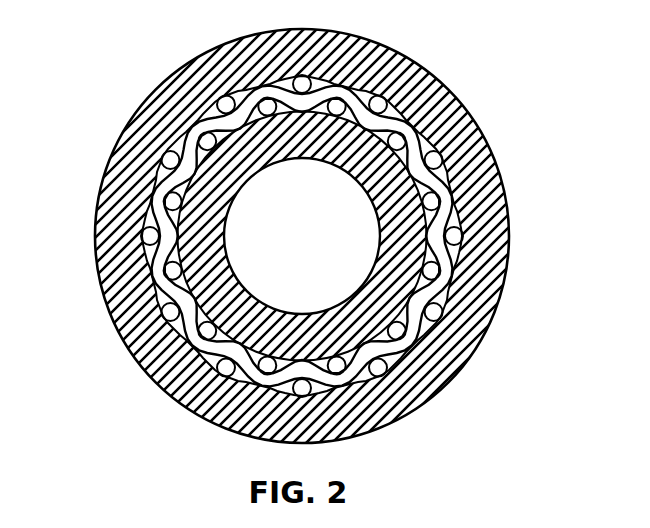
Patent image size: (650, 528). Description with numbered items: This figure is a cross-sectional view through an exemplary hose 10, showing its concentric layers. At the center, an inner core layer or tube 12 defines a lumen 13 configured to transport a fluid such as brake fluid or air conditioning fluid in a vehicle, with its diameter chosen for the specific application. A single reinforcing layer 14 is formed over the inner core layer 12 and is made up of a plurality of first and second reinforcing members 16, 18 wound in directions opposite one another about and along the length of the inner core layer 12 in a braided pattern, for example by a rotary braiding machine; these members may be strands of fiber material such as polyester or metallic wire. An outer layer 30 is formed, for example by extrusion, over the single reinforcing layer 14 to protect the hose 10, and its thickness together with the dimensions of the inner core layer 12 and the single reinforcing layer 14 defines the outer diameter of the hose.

The hose 10 is at (120, 67).
The inner core layer 12 is at (187, 253).
The lumen 13 is at (302, 236).
The single reinforcing layer 14 is at (164, 301).
The first reinforcing members 16 is at (386, 104).
The second reinforcing members 18 is at (458, 184).
The outer layer 30 is at (395, 53).